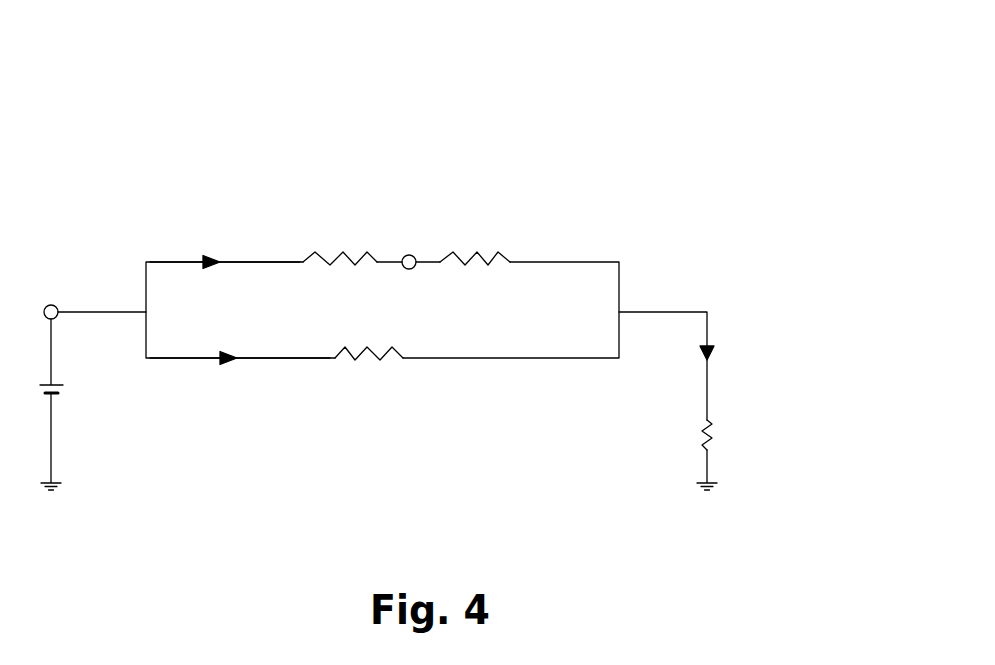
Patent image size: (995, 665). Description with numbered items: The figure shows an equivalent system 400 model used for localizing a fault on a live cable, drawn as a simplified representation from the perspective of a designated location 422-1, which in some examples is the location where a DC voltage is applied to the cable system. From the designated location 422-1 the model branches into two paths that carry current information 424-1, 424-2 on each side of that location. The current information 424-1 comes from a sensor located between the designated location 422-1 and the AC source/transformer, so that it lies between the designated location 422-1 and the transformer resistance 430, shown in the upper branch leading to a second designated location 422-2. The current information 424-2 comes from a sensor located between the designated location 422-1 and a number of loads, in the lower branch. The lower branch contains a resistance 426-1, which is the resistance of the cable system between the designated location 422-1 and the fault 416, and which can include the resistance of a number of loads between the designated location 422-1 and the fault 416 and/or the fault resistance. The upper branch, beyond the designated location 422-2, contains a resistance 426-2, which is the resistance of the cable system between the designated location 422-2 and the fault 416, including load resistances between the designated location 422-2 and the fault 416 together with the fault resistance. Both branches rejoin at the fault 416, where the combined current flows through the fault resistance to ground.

The equivalent system model 400 is at (662, 52).
The designated location 422-1 is at (55, 305).
The designated location 422-2 is at (403, 257).
The current information 424-1 is at (218, 225).
The current information 424-2 is at (243, 350).
The transformer resistance 430 is at (340, 222).
The resistance 426-2 is at (508, 245).
The resistance 426-1 is at (372, 364).
The fault 416 is at (702, 435).